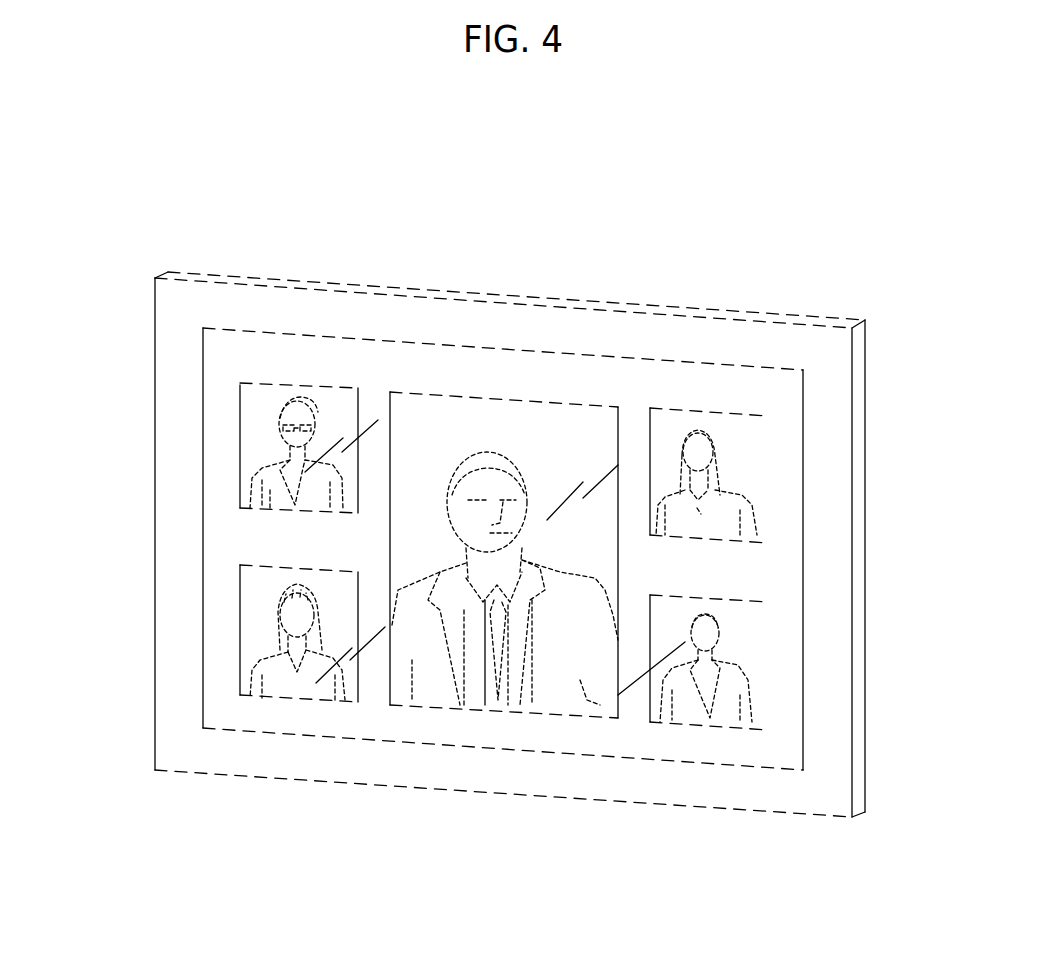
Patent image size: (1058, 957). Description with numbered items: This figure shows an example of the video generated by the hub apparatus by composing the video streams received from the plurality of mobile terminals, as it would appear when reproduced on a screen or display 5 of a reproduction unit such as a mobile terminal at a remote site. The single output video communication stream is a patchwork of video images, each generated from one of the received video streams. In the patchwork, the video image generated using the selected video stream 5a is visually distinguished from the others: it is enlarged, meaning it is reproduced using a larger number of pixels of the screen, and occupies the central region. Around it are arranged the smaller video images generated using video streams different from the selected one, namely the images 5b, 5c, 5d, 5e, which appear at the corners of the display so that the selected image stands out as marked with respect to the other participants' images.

The display device 5 is at (702, 310).
The video image generated using the selected video stream 5a is at (473, 395).
The video image generated using a non-selected video stream 5b is at (308, 383).
The video image generated using a non-selected video stream 5c is at (235, 659).
The video image generated using a non-selected video stream 5d is at (765, 667).
The video image generated using a non-selected video stream 5e is at (765, 457).